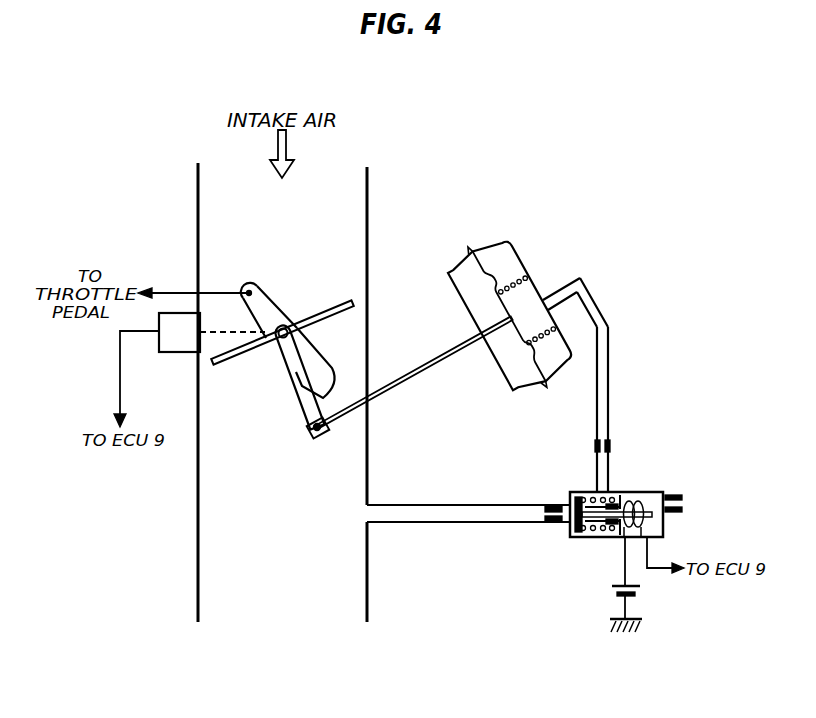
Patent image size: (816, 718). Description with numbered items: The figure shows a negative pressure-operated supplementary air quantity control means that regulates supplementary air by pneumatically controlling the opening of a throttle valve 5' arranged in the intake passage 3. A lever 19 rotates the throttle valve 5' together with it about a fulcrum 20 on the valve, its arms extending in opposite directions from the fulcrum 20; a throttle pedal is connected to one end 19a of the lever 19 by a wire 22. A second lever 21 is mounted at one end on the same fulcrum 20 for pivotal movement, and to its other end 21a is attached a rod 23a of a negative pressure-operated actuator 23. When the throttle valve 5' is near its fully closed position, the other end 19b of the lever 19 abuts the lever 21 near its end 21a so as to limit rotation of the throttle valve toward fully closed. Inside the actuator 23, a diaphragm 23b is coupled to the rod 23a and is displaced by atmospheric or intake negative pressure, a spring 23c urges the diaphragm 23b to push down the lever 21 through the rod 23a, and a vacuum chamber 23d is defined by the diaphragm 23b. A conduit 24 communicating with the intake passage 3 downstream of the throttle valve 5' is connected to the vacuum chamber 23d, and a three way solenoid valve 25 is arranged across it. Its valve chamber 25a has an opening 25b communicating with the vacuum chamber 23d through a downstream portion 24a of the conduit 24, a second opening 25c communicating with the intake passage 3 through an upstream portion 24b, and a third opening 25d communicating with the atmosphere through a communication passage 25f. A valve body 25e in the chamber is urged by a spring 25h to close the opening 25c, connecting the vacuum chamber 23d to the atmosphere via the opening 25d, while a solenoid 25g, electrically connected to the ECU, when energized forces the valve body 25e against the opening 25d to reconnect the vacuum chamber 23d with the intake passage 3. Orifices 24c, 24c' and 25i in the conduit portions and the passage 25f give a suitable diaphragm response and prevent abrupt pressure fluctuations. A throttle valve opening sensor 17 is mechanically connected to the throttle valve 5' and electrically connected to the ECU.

The intake passage 3 is at (368, 212).
The throttle valve 5' is at (283, 299).
The throttle valve opening sensor 17 is at (173, 353).
The lever 19 is at (322, 315).
The one end of the lever 19a is at (252, 286).
The other end of the lever 19b is at (322, 397).
The fulcrum 20 is at (283, 328).
The second lever 21 is at (287, 400).
The other end of the second lever 21a is at (313, 440).
The wire 22 is at (169, 291).
The negative pressure-operated actuator 23 is at (511, 293).
The rod 23a is at (405, 383).
The diaphragm 23b is at (513, 330).
The spring 23c is at (519, 280).
The vacuum chamber 23d is at (546, 296).
The conduit 24 is at (602, 370).
The downstream portion of the conduit 24a is at (601, 411).
The upstream portion of the conduit 24b is at (468, 520).
The orifice 24c is at (626, 435).
The orifice 24c' is at (523, 497).
The three way solenoid valve 25 is at (630, 544).
The valve chamber 25a is at (583, 497).
The opening 25b is at (590, 493).
The second opening 25c is at (577, 516).
The third opening 25d is at (611, 496).
The valve body 25e is at (575, 538).
The communication passage 25f is at (683, 502).
The solenoid 25g is at (641, 537).
The spring 25h is at (595, 538).
The orifice 25i is at (683, 512).